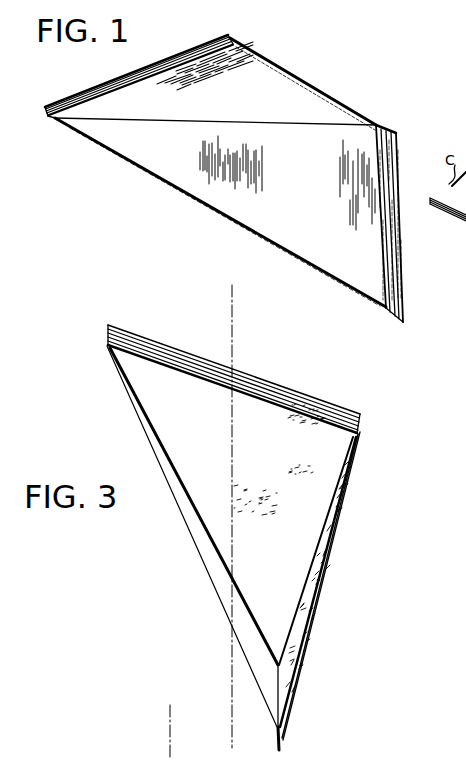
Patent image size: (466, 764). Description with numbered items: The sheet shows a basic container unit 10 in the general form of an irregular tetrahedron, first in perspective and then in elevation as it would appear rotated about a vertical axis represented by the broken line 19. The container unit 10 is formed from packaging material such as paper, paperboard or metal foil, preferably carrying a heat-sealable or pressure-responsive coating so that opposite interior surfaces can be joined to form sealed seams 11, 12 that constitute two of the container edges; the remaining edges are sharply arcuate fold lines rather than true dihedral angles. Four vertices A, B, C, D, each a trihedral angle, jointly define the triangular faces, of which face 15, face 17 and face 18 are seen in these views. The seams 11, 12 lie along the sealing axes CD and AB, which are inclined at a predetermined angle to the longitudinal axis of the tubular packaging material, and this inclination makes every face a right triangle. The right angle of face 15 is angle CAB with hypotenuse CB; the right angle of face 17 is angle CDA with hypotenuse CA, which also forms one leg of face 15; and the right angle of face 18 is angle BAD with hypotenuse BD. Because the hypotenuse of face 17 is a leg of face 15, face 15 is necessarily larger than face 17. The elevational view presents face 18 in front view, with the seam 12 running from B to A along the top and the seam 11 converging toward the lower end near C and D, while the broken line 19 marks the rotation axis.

In FIG. 1, the basic container unit 10 is at (242, 178).
In FIG. 3, the basic container unit 10 is at (248, 539).
In FIG. 1, the sealed seam 11 is at (112, 84).
In FIG. 3, the sealed seam 11 is at (282, 743).
In FIG. 1, the sealed seam 12 is at (400, 264).
In FIG. 3, the sealed seam 12 is at (285, 394).
In FIG. 1, the triangular face 15 is at (306, 184).
In FIG. 1, the triangular face 17 is at (294, 107).
In FIG. 3, the triangular face 18 is at (262, 508).
In FIG. 1, the vertical axis 19 is at (233, 314).
In FIG. 3, the vertical axis 19 is at (168, 735).
In FIG. 1, the vertex A is at (377, 124).
In FIG. 3, the vertex A is at (356, 438).
In FIG. 1, the vertex B is at (385, 307).
In FIG. 3, the vertex B is at (109, 350).
In FIG. 1, the vertex C is at (58, 120).
In FIG. 3, the vertex C is at (284, 718).
In FIG. 1, the vertex D is at (240, 40).
In FIG. 3, the vertex D is at (282, 661).